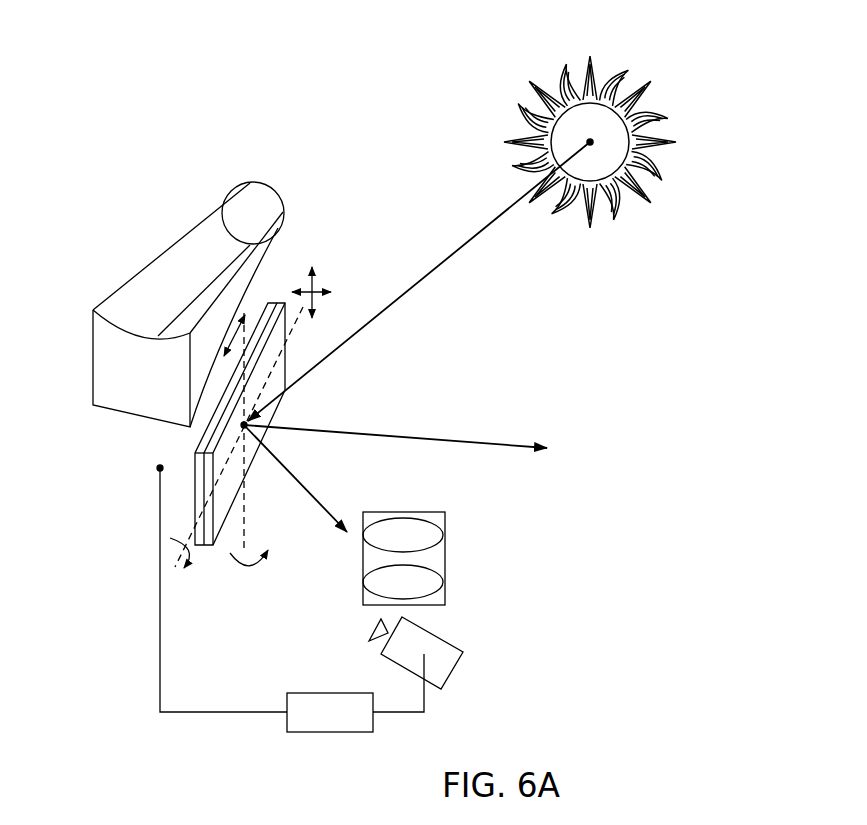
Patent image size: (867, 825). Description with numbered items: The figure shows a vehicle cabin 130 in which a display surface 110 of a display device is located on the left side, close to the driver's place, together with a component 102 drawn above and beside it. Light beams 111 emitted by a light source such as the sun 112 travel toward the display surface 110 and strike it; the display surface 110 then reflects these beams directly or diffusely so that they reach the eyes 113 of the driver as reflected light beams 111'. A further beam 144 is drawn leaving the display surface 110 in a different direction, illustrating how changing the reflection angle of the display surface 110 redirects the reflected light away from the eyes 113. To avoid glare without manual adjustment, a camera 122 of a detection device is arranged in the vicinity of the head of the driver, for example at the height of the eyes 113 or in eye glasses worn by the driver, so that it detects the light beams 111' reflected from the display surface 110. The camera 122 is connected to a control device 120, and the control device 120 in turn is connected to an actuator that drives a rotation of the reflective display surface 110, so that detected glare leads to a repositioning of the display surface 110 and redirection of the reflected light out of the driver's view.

The reflector 102 is at (185, 263).
The display surface 110 is at (222, 537).
The light beams 111 is at (419, 281).
The reflected light beams 111' is at (316, 478).
The sun 112 is at (610, 128).
The eyes 113 is at (425, 533).
The control device 120 is at (340, 708).
The camera 122 is at (442, 660).
The vehicle cabin 130 is at (547, 322).
The transmitted light beam 144 is at (488, 443).